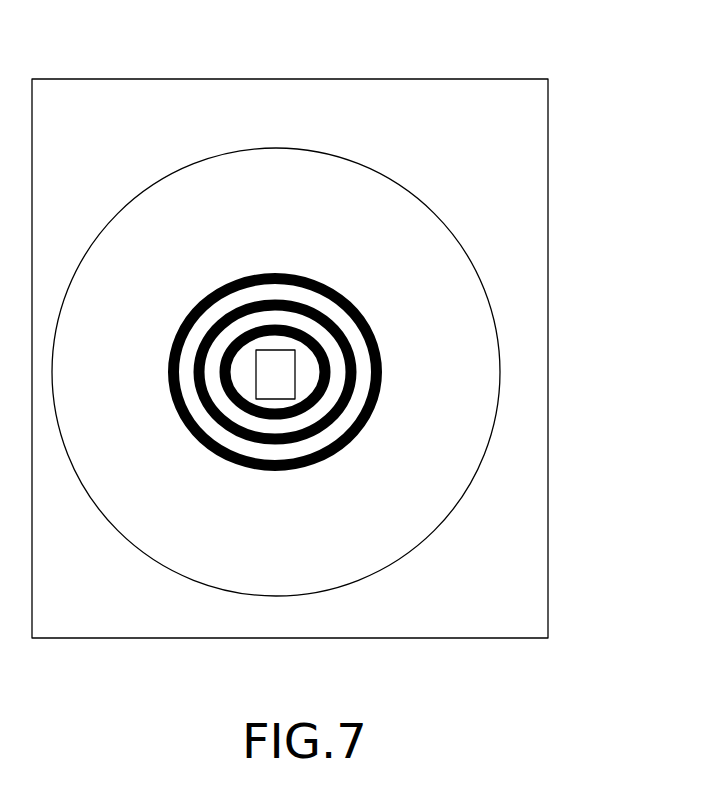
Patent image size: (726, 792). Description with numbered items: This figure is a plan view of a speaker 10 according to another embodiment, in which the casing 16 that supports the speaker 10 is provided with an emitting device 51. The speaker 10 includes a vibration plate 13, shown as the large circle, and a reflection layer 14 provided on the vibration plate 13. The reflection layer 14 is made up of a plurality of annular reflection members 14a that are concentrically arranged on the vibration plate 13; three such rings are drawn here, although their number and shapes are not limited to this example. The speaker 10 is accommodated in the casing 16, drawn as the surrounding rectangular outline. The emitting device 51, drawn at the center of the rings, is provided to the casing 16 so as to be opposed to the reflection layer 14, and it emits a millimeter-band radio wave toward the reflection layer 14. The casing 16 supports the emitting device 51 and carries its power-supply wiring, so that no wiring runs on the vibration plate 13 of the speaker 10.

The speaker 10 is at (290, 307).
The vibration plate 13 is at (472, 325).
The reflection layer 14 is at (281, 322).
The annular reflection member 14a is at (387, 233).
The casing 16 is at (549, 356).
The emitting device 51 is at (278, 382).